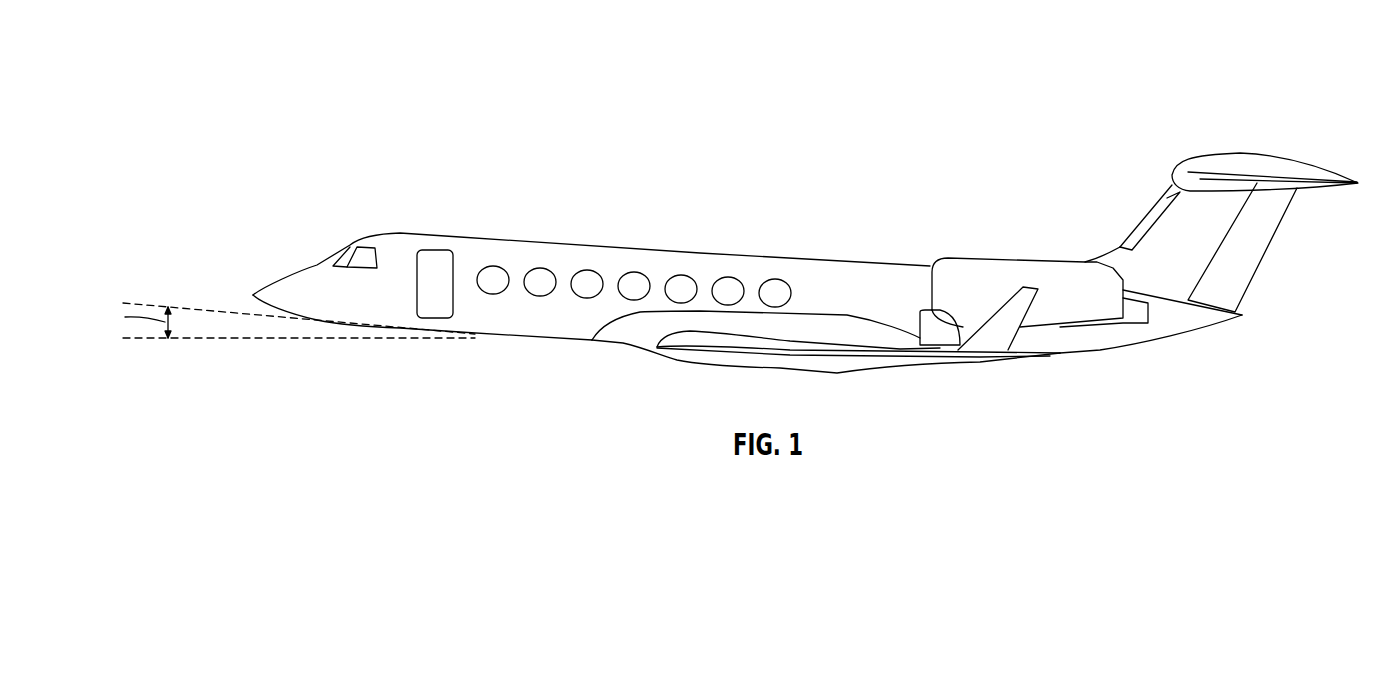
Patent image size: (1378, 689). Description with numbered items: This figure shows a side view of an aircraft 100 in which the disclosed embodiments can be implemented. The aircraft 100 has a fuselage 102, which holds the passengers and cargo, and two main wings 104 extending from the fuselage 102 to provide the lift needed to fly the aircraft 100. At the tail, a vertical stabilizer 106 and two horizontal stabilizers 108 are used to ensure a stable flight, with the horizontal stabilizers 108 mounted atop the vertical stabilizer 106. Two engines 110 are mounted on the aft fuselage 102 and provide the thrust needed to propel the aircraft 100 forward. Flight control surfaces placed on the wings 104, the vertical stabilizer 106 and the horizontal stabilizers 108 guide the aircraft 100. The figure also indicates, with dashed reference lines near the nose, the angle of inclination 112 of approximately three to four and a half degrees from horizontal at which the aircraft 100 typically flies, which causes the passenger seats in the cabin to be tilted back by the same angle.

The aircraft 100 is at (322, 69).
The fuselage 102 is at (470, 238).
The main wings 104 is at (987, 347).
The vertical stabilizer 106 is at (1260, 263).
The horizontal stabilizers 108 is at (1257, 165).
The engines 110 is at (962, 263).
The angle of inclination 112 is at (163, 274).